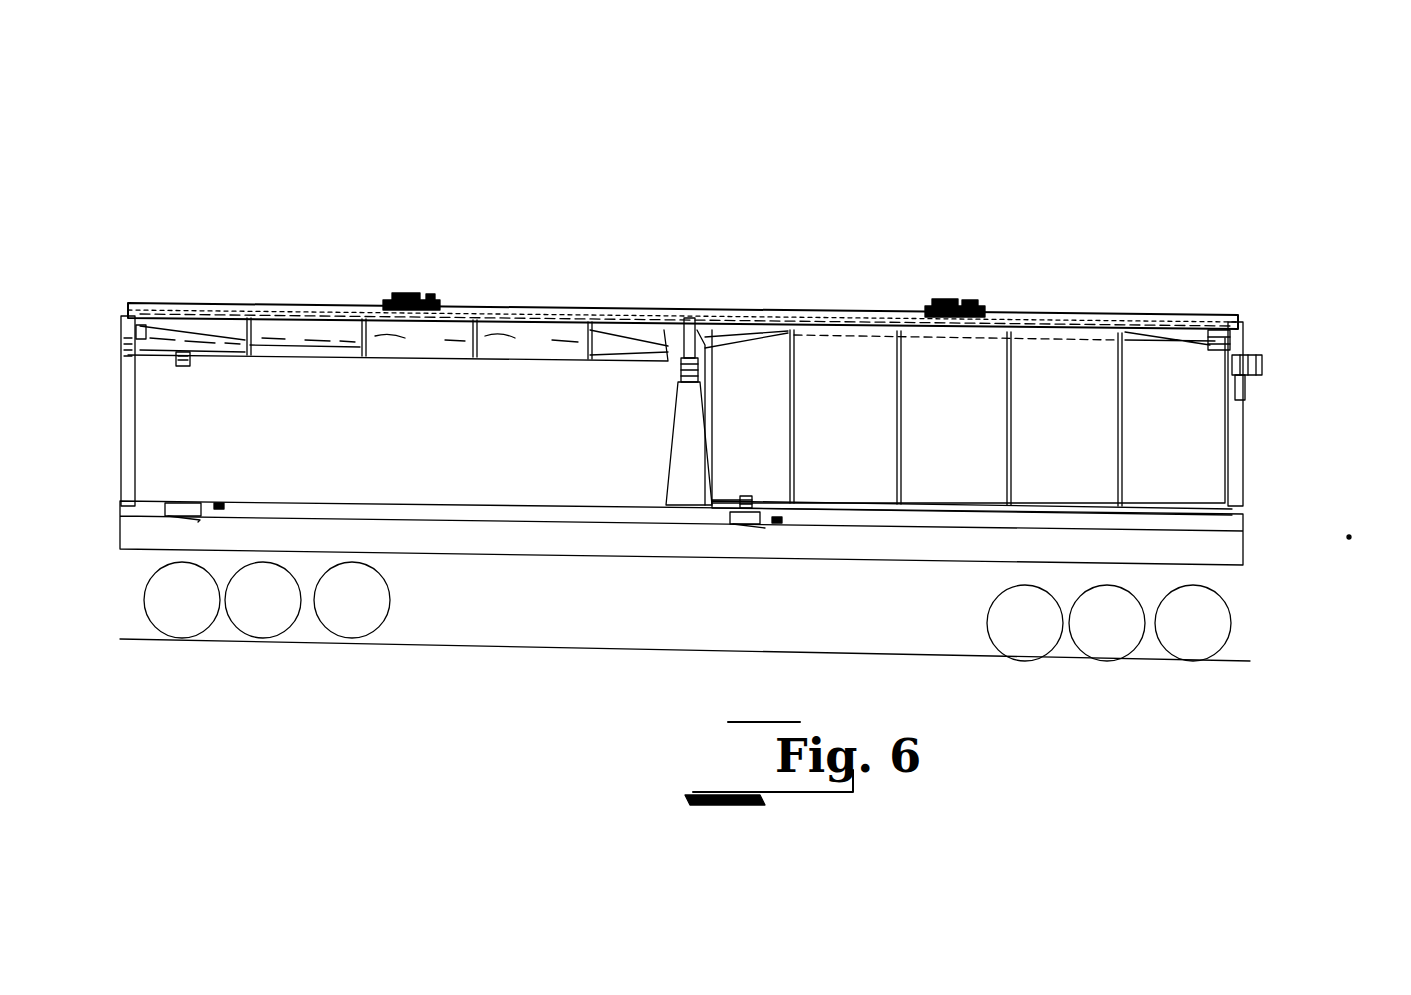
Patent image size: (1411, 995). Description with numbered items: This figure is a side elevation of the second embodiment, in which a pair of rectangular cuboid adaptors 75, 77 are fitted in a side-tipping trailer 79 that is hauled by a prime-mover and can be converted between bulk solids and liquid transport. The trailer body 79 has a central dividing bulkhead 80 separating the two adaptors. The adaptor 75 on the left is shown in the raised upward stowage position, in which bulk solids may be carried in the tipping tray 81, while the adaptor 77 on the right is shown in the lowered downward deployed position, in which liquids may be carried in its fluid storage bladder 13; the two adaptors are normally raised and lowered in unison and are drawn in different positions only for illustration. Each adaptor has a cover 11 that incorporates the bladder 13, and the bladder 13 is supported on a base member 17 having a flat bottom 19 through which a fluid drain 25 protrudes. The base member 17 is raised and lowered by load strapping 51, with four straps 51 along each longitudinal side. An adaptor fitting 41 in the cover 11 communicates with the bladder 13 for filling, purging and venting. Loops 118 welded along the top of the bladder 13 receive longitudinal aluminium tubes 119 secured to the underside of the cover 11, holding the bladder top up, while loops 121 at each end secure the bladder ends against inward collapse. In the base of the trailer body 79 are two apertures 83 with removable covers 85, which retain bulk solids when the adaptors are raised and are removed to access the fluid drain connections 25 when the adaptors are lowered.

The cover 11 is at (108, 300).
The fluid storage bladder 13 is at (1322, 437).
The base member 17 is at (275, 366).
The flat bottom 19 is at (312, 340).
The fluid drain 25 is at (178, 362).
The adaptor fitting 41 is at (422, 294).
The load strapping 51 is at (292, 330).
The adaptor 75 is at (445, 278).
The adaptor 77 is at (1040, 268).
The side-tipping trailer 79 is at (1362, 531).
The central dividing bulkhead 80 is at (680, 425).
The tipping tray 81 is at (398, 399).
The aperture 83 is at (222, 505).
The removable cover 85 is at (182, 503).
The loop 118 is at (670, 312).
The longitudinal aluminium tube 119 is at (765, 318).
The loop 121 is at (680, 357).